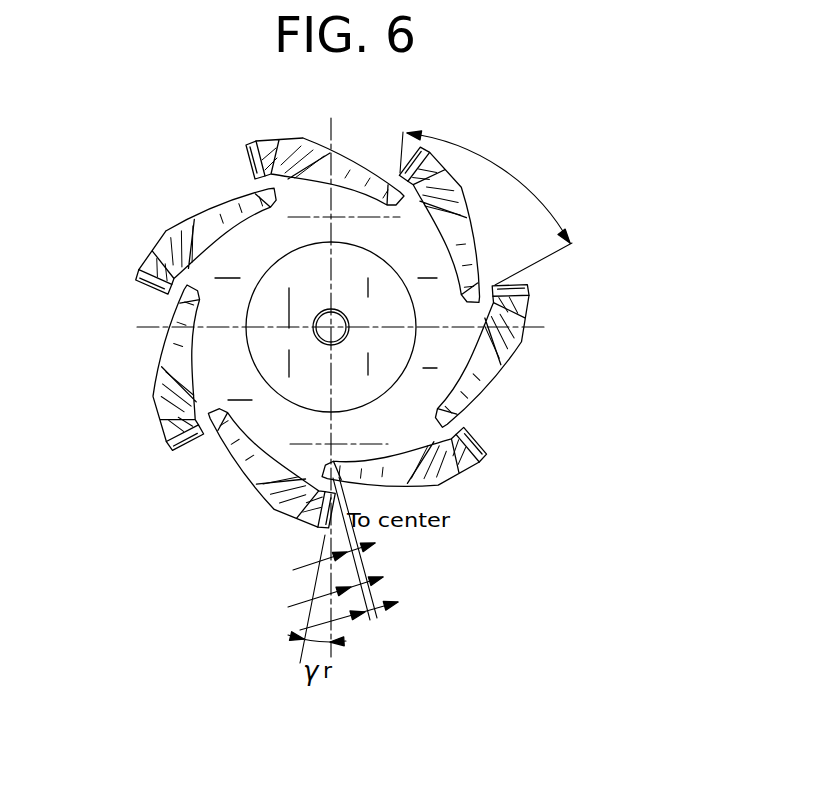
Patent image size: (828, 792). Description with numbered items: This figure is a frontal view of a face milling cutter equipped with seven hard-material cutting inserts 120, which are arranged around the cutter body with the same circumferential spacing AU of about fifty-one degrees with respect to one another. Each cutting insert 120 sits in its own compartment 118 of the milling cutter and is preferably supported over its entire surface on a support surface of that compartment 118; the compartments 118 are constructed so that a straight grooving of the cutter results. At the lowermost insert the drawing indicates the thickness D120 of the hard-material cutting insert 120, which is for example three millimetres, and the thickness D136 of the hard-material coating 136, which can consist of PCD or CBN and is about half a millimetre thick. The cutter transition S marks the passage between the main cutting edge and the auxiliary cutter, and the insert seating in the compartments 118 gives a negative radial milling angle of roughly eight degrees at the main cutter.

The compartment 118 is at (228, 202).
The hard-material cutting insert 120 is at (257, 140).
The hard-material coating 136 is at (320, 527).
The circumferential spacing AU is at (467, 148).
The cutter transition S is at (367, 497).
The thickness of the hard-material cutting insert D120 is at (388, 603).
The thickness of the hard-material coating D136 is at (378, 570).